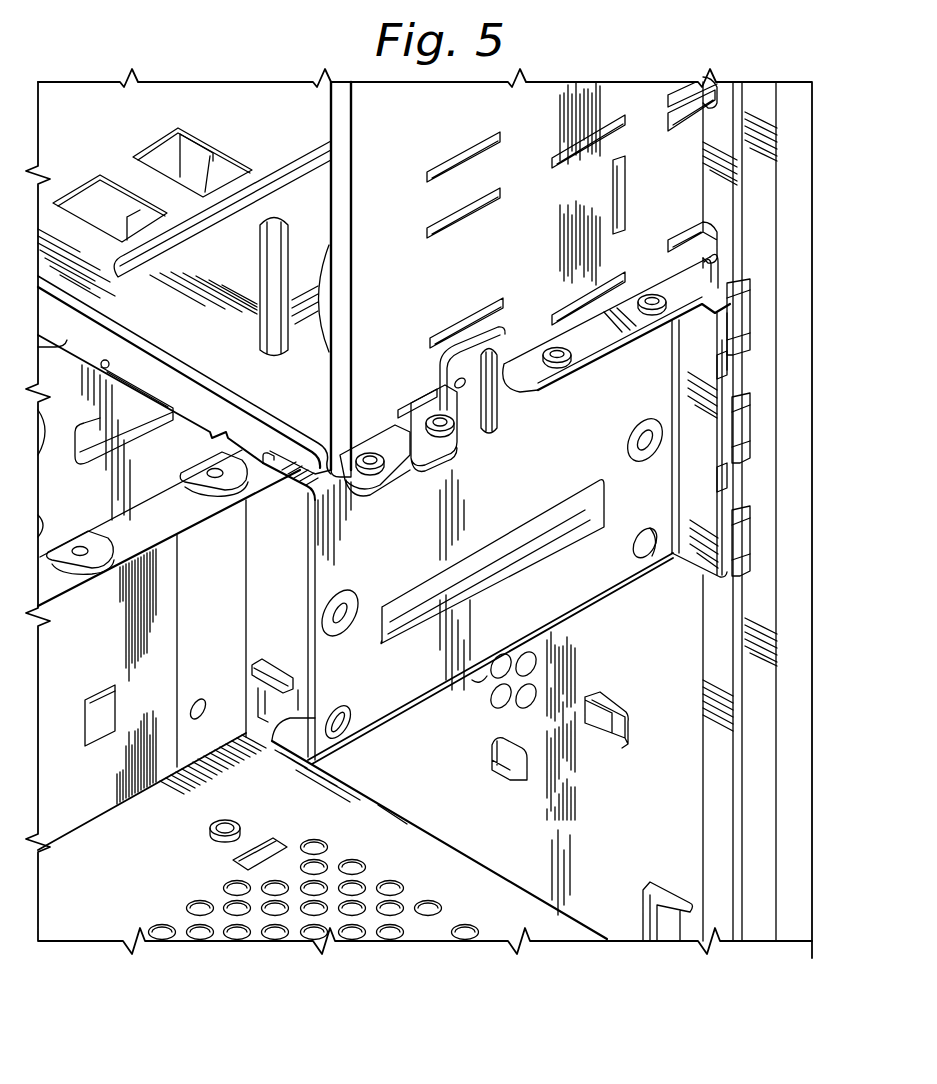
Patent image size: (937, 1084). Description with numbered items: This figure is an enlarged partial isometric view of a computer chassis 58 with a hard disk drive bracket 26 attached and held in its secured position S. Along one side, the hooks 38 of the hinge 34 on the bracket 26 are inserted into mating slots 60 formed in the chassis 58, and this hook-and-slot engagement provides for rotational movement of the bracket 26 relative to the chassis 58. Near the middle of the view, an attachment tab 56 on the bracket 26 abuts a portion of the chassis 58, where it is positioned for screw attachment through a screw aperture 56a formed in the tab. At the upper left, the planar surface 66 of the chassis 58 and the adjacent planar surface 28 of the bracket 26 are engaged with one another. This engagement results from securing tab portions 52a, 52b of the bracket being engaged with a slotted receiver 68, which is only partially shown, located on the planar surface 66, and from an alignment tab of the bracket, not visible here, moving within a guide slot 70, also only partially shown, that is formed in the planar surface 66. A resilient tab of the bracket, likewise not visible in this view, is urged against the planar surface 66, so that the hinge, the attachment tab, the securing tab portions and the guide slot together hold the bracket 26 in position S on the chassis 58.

The chassis 58 is at (290, 52).
The slotted receiver 68 is at (201, 137).
The securing tab portion 52a is at (218, 173).
The securing tab portion 52b is at (115, 222).
The planar surface 66 is at (218, 348).
The guide slot 70 is at (327, 333).
The screw aperture 56a is at (447, 370).
The attachment tab 56 is at (502, 335).
The planar surface 28 is at (203, 410).
The mating slot 60 is at (752, 297).
The hook 38 is at (742, 326).
The hinge 34 is at (696, 488).
The bracket 26 is at (428, 713).
The secured position S is at (295, 740).